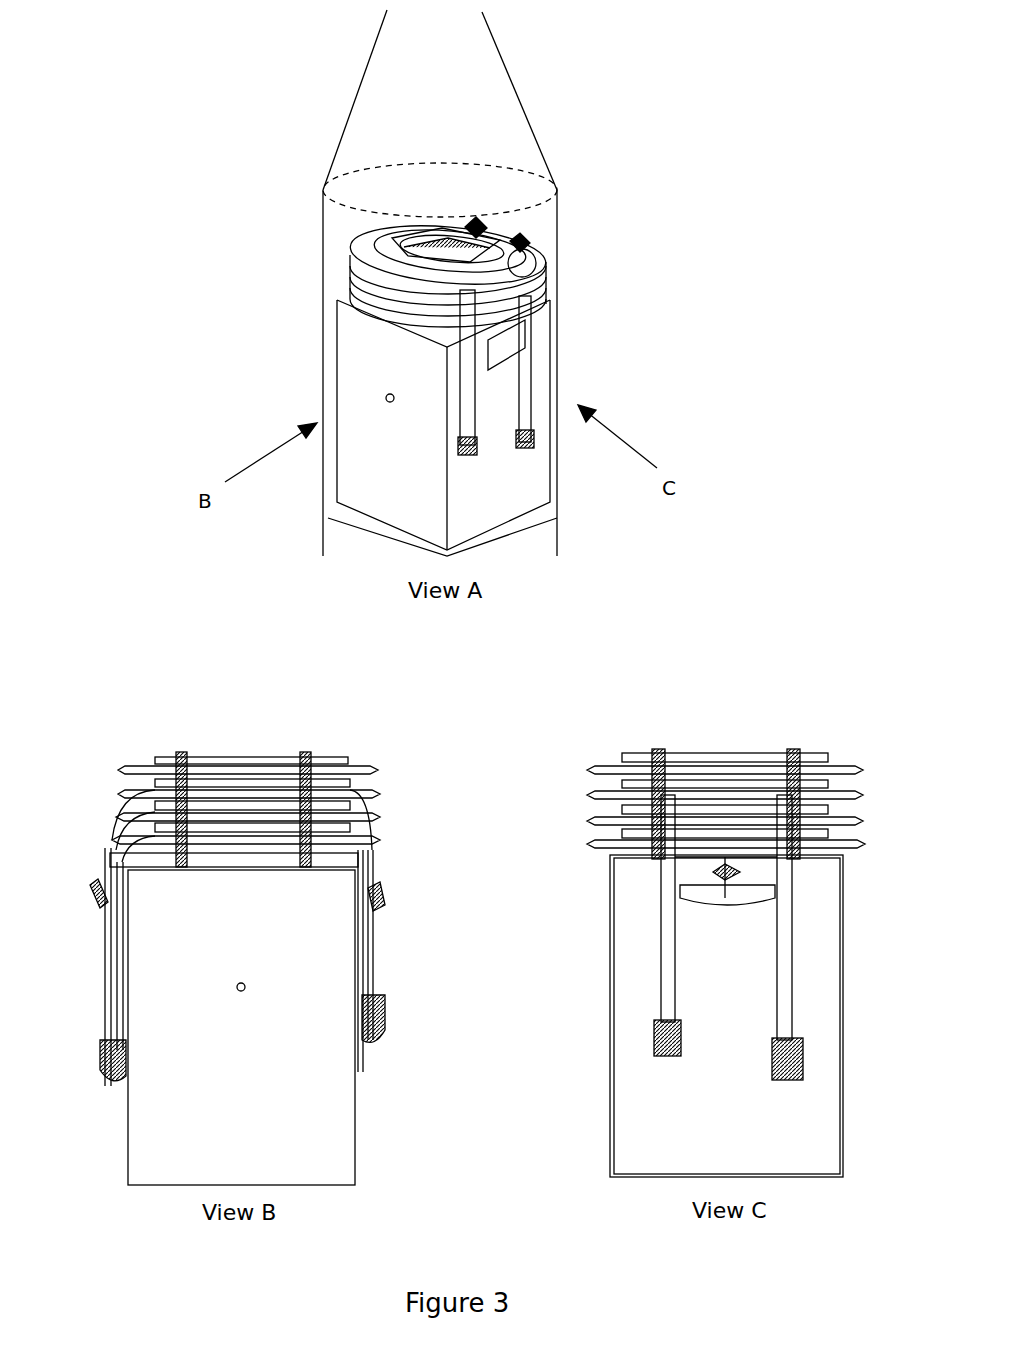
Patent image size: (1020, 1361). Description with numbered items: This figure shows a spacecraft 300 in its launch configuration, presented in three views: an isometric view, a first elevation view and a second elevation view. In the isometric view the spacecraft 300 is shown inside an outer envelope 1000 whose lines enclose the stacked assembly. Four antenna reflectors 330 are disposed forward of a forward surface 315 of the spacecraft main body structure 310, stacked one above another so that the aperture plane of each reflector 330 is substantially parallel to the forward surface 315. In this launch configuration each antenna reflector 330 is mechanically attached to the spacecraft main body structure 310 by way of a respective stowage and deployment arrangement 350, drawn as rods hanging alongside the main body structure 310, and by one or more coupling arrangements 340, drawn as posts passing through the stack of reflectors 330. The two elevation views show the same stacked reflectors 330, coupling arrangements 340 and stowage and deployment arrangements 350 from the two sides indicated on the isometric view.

The housing 1000 is at (510, 80).
The spacecraft 300 is at (327, 290).
The spacecraft main body structure 310 is at (416, 441).
The forward surface 315 is at (337, 862).
The antenna reflector 330 is at (540, 260).
The coupling arrangement 340 is at (480, 223).
The stowage and deployment arrangement 350 is at (475, 385).